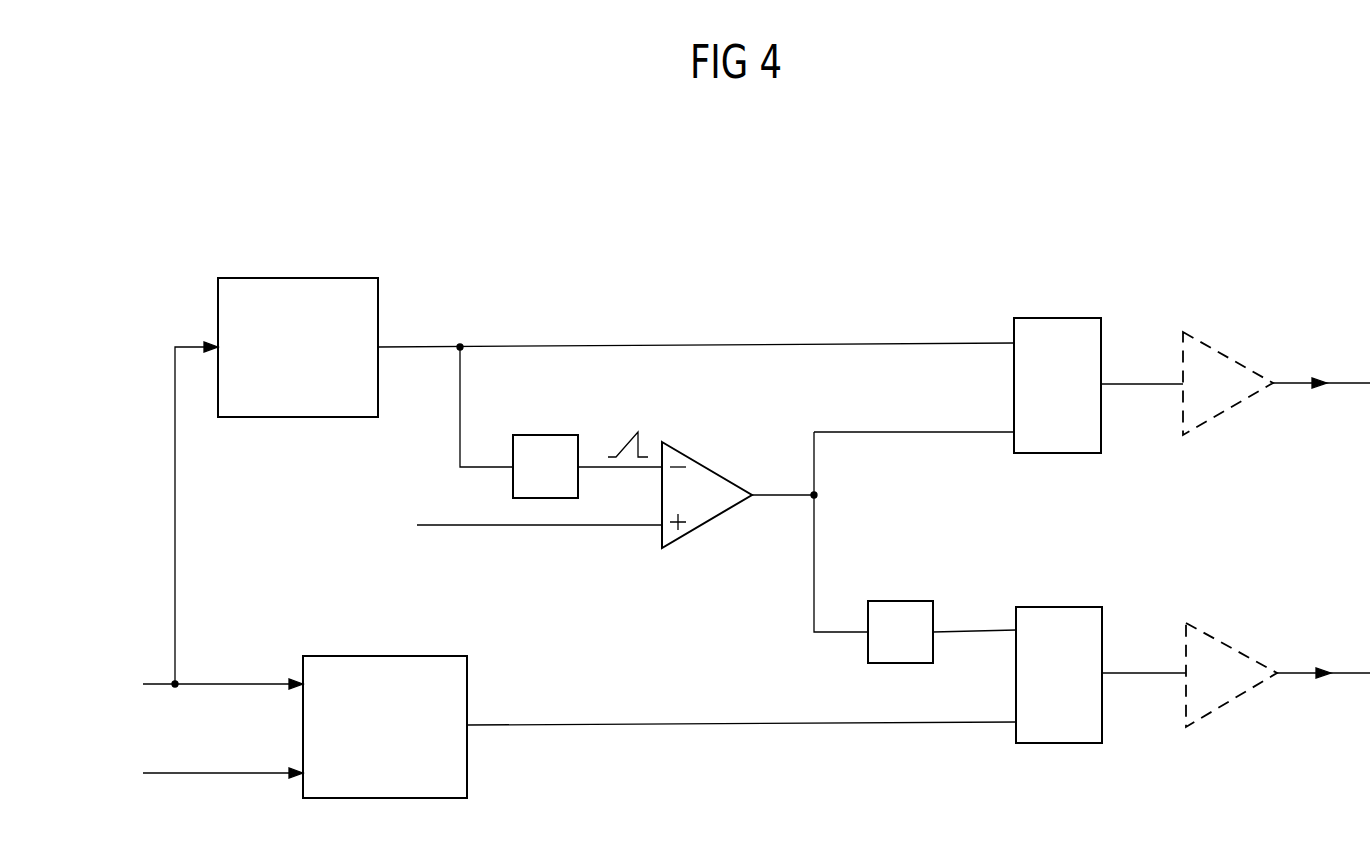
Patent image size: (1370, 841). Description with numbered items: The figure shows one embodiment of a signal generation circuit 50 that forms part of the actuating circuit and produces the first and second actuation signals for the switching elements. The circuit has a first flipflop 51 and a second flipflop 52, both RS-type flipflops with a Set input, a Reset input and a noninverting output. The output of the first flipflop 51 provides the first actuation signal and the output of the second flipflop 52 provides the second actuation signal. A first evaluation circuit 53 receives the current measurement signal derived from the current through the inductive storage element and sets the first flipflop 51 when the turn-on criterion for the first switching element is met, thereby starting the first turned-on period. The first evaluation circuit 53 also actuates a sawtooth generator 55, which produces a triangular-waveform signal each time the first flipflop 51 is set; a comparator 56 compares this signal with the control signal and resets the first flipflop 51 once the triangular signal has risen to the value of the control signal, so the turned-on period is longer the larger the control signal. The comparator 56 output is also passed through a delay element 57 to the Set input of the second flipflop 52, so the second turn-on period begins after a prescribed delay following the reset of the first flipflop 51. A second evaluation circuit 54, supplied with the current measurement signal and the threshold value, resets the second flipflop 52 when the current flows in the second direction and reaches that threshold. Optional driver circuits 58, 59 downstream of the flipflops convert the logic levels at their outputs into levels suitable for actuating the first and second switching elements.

The signal generation circuit 50 is at (727, 254).
The first flipflop 51 is at (1056, 318).
The second flipflop 52 is at (1058, 607).
The first evaluation circuit 53 is at (272, 278).
The second evaluation circuit 54 is at (356, 656).
The sawtooth generator 55 is at (545, 435).
The comparator 56 is at (703, 462).
The delay element 57 is at (900, 601).
The driver circuit 58 is at (1228, 357).
The driver circuit 59 is at (1228, 647).